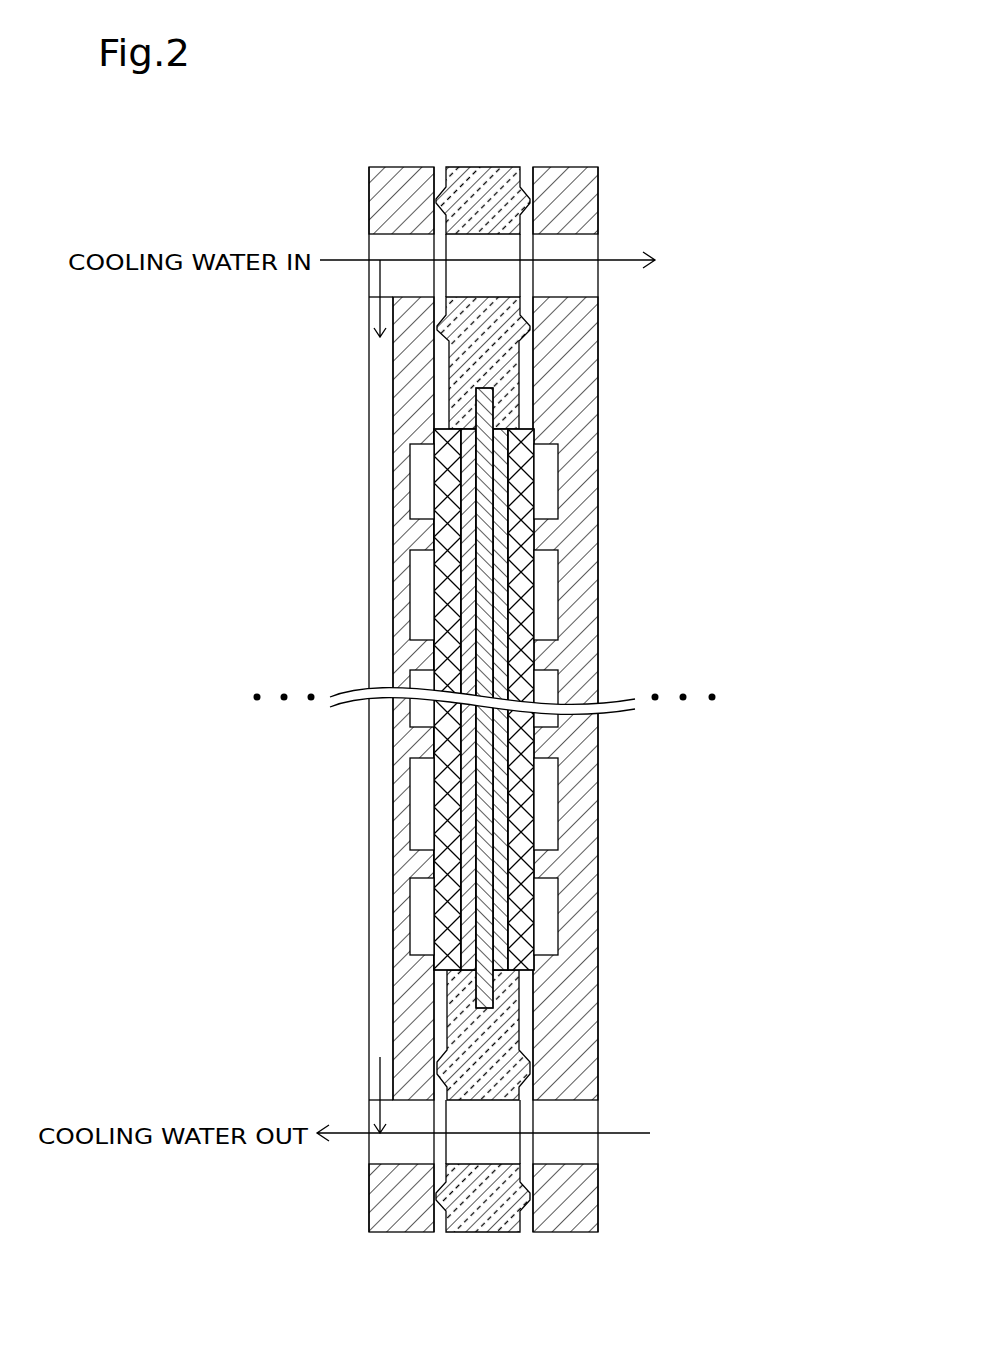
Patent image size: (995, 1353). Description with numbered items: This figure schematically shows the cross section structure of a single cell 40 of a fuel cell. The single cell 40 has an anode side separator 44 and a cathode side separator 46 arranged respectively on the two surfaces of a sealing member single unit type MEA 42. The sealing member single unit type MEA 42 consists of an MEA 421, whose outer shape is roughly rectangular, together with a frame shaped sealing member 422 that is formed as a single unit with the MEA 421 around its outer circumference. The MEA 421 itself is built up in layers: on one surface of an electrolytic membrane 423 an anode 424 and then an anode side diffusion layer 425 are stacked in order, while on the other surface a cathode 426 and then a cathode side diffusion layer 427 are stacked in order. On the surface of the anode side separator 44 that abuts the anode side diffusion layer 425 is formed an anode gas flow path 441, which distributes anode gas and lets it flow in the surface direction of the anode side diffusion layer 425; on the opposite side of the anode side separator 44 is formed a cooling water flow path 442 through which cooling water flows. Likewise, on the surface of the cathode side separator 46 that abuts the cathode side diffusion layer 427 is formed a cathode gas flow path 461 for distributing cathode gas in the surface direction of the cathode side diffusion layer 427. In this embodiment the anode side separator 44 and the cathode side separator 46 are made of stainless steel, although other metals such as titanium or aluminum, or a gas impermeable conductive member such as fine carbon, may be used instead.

The single cell 40 is at (628, 153).
The sealing member single unit type MEA 42 is at (480, 167).
The anode side separator 44 is at (398, 167).
The cathode side separator 46 is at (564, 167).
The MEA 421 is at (372, 698).
The frame shaped sealing member 422 is at (507, 355).
The electrolytic membrane 423 is at (482, 516).
The anode 424 is at (463, 548).
The anode side diffusion layer 425 is at (440, 578).
The cathode 426 is at (502, 490).
The cathode side diffusion layer 427 is at (512, 453).
The anode gas flow path 441 is at (423, 850).
The cooling water flow path 442 is at (377, 927).
The cathode gas flow path 461 is at (550, 757).